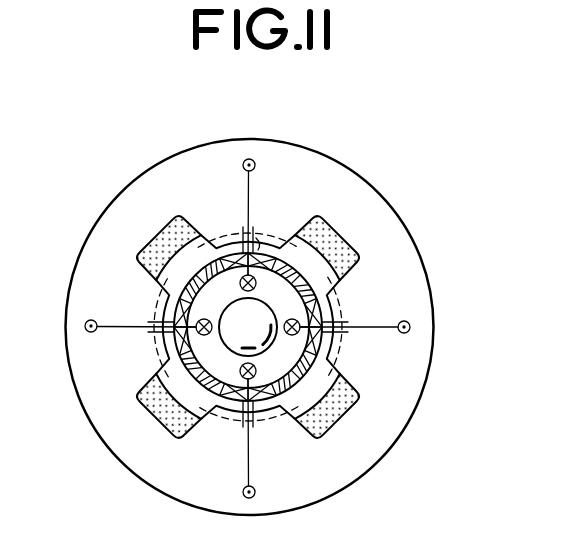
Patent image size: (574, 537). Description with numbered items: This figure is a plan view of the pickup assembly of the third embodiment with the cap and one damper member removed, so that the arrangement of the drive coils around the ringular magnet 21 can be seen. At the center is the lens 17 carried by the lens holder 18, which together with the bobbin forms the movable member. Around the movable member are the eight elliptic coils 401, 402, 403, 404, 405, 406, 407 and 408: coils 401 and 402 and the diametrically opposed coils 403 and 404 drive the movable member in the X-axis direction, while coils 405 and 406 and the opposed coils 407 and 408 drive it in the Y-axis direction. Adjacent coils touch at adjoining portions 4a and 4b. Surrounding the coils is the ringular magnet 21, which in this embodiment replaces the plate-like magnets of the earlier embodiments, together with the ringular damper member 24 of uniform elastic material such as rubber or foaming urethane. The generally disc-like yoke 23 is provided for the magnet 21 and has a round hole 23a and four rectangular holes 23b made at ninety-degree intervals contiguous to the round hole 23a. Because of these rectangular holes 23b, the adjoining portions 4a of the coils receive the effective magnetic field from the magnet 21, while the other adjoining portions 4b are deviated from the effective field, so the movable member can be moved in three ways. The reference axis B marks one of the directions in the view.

The yoke 23 is at (342, 172).
The round hole 23a is at (258, 241).
The rectangular holes 23b is at (160, 237).
The ringular magnet 21 is at (143, 403).
The adjoining portions 4a is at (238, 243).
The adjoining portions 4b is at (203, 407).
The lens 17 is at (258, 312).
The lens holder 18 is at (171, 338).
The damper member 24 is at (262, 400).
The coil 401 is at (140, 333).
The coil 402 is at (158, 289).
The coil 403 is at (343, 337).
The coil 404 is at (343, 316).
The coil 405 is at (242, 455).
The coil 406 is at (254, 456).
The coil 407 is at (230, 262).
The coil 408 is at (256, 167).
The reference axis B is at (108, 321).